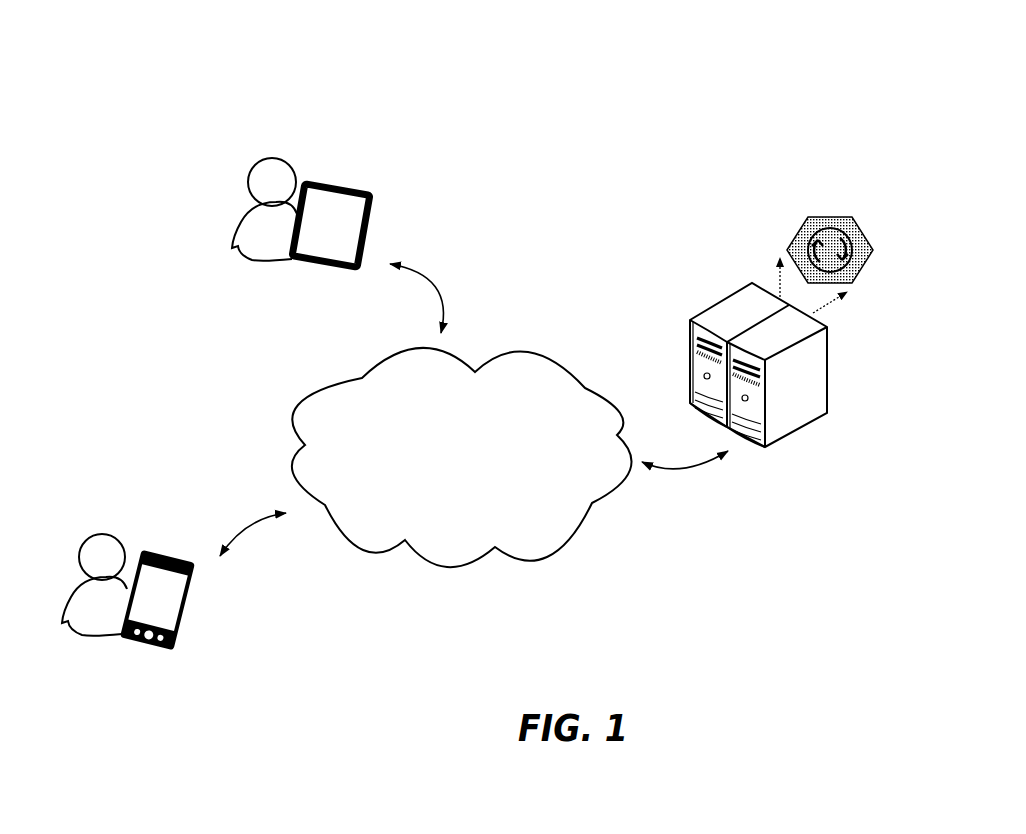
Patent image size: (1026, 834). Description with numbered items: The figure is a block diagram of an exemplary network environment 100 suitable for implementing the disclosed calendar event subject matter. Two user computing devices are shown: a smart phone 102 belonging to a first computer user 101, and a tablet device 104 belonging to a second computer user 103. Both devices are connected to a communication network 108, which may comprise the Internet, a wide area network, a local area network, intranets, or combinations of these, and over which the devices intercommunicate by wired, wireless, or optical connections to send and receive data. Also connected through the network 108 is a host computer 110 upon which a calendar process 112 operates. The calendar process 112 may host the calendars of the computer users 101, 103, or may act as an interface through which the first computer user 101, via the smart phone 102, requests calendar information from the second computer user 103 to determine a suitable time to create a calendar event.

The network environment 100 is at (762, 108).
The computer user 101 is at (117, 533).
The smart phone 102 is at (165, 548).
The computer user 103 is at (282, 158).
The tablet device 104 is at (336, 177).
The network 108 is at (443, 578).
The host computer 110 is at (717, 296).
The calendar process 112 is at (817, 203).